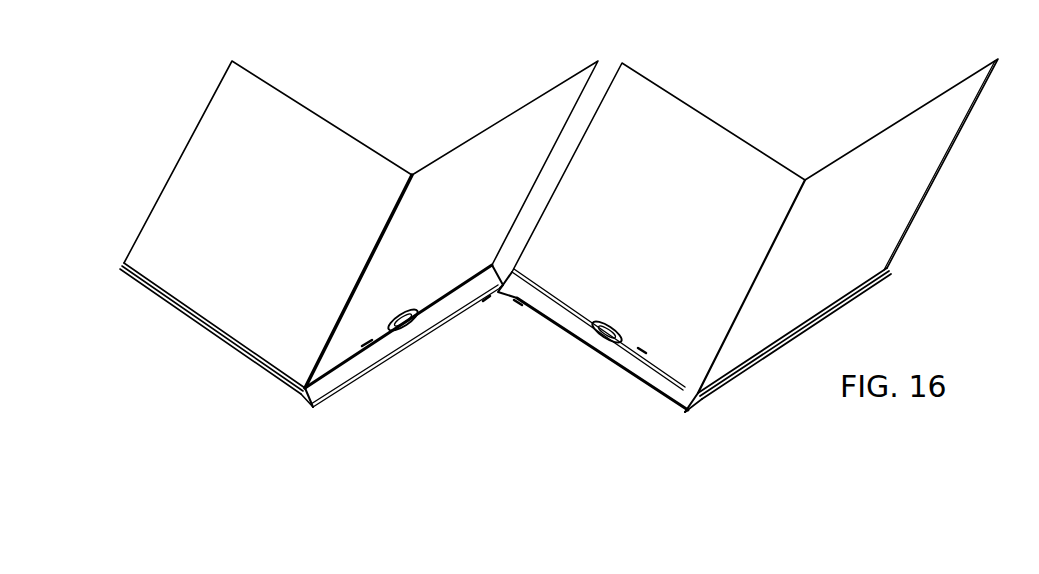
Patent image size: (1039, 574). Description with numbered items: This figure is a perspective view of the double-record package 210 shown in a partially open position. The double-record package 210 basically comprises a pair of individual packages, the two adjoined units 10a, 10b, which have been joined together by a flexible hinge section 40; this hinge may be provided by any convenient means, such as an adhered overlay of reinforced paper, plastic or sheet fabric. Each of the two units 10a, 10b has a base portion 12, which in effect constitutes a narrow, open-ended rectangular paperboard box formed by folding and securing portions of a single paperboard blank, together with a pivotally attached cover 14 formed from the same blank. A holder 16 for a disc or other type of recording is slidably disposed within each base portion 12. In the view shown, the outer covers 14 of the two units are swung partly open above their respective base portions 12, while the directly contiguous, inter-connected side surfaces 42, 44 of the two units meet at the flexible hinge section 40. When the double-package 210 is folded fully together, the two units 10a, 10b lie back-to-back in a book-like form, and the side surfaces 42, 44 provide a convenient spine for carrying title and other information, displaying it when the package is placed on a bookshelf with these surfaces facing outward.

The double-record package 210 is at (698, 60).
The cover 14 is at (285, 117).
The side surface 42 is at (512, 247).
The side surface 44 is at (540, 207).
The flexible hinge section 40 is at (492, 298).
The adjoined unit 10a is at (415, 357).
The adjoined unit 10b is at (577, 355).
The base portion 12 is at (362, 350).
The holder 16 is at (327, 387).